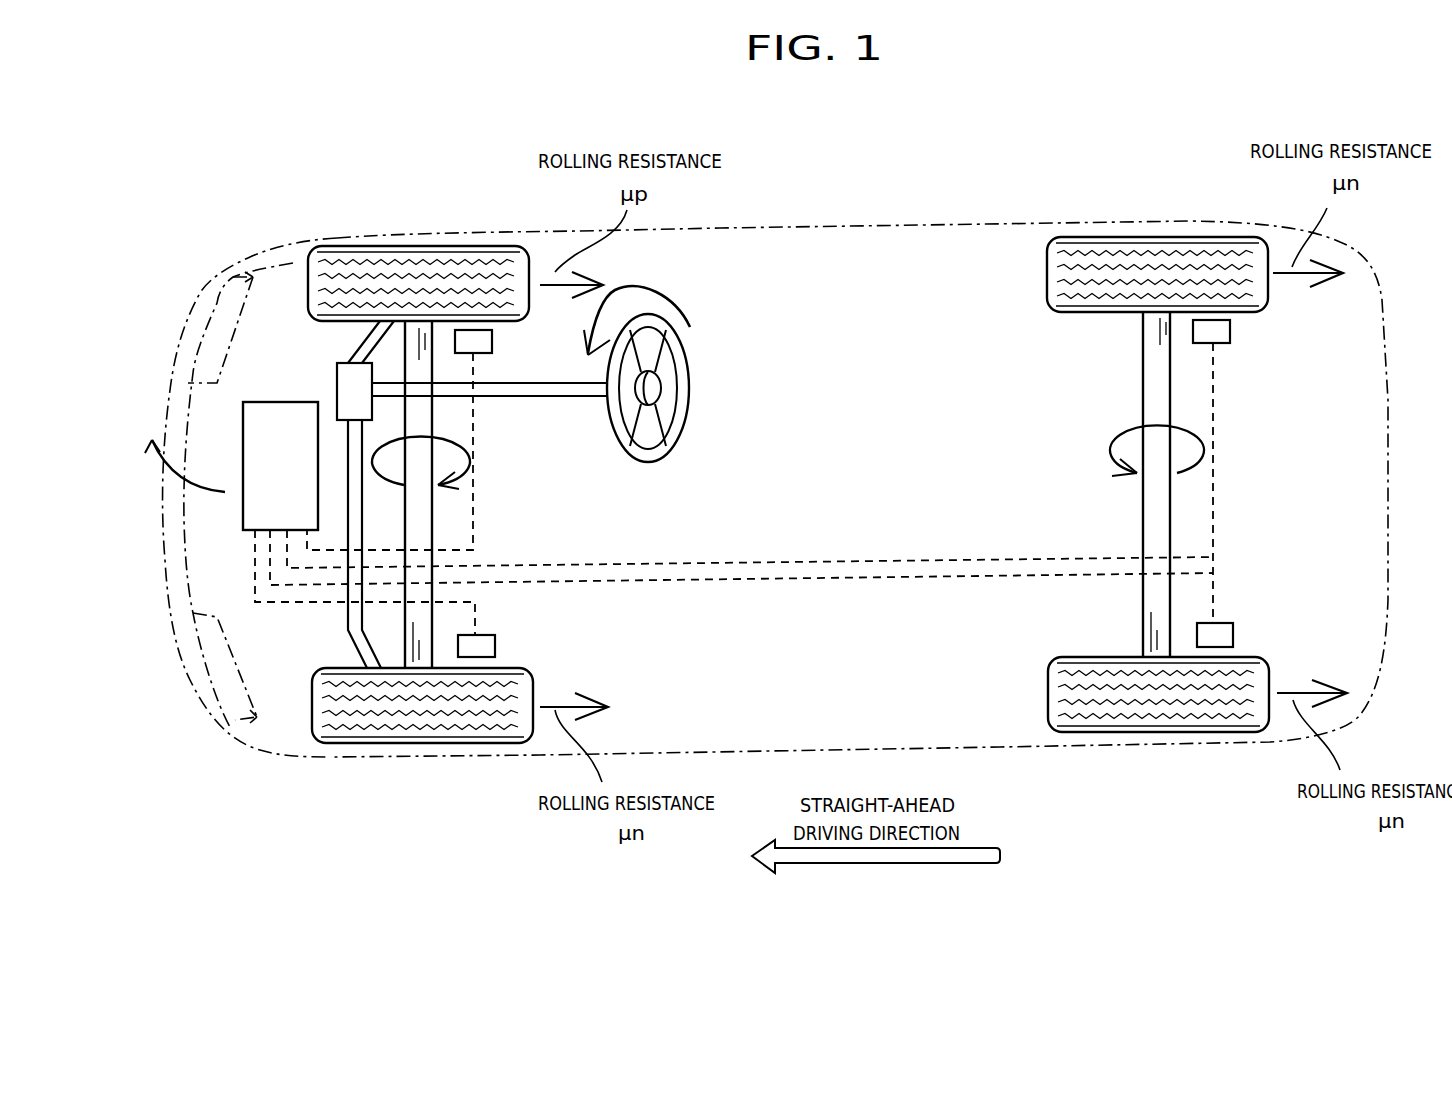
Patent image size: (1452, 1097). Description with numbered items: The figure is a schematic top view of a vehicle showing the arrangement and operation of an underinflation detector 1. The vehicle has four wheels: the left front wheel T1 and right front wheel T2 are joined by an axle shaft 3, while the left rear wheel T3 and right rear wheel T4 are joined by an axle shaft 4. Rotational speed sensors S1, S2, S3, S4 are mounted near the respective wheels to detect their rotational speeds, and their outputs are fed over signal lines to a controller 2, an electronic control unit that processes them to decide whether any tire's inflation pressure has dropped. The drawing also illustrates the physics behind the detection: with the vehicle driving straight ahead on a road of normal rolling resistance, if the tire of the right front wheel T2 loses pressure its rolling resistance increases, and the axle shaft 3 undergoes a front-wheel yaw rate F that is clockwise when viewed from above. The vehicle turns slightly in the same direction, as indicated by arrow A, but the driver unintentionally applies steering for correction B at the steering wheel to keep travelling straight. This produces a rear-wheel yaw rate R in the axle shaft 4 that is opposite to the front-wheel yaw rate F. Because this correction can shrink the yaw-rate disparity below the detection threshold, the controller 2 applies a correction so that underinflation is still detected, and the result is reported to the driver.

The underinflation detector 1 is at (288, 320).
The controller 2 is at (281, 384).
The axle shaft 3 is at (428, 522).
The axle shaft 4 is at (1153, 528).
The arrow A is at (183, 449).
The steering for correction B is at (667, 287).
The front-wheel yaw rate F is at (455, 430).
The rear-wheel yaw rate R is at (1108, 428).
The left front wheel T1 is at (423, 744).
The right front wheel T2 is at (417, 246).
The left rear wheel T3 is at (1152, 733).
The right rear wheel T4 is at (1142, 237).
The rotational speed sensor S1 is at (497, 647).
The rotational speed sensor S2 is at (497, 343).
The rotational speed sensor S3 is at (1222, 633).
The rotational speed sensor S4 is at (1231, 343).